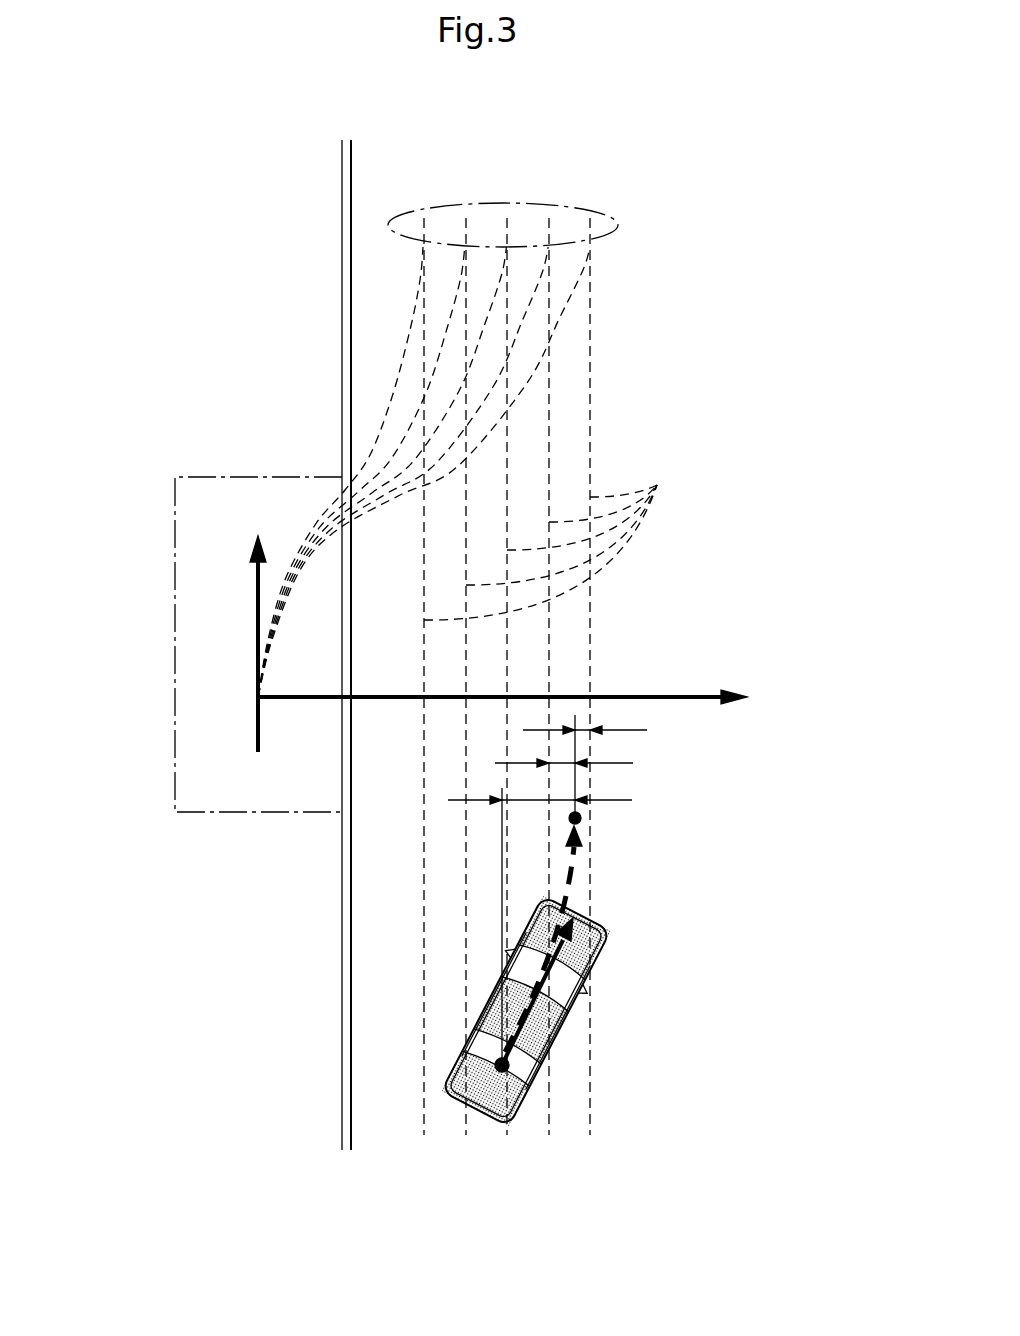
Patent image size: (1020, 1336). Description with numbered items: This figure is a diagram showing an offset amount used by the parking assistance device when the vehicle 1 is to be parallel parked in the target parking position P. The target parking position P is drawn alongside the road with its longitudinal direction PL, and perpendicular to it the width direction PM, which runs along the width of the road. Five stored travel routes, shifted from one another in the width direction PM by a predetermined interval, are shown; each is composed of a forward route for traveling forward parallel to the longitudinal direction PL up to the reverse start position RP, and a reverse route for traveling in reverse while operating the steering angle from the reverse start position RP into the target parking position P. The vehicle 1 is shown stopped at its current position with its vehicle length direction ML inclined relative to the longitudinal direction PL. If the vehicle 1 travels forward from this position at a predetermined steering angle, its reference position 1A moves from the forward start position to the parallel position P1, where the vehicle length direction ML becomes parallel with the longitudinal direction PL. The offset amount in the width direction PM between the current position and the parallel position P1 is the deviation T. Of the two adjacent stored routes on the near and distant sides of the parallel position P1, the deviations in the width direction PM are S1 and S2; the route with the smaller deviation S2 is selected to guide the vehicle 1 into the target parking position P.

The vehicle 1 is at (500, 1063).
The reference position 1A is at (492, 1073).
The reverse start position RP is at (618, 225).
The target parking position P is at (175, 660).
The longitudinal direction PL is at (257, 612).
The width direction PM is at (665, 697).
The parallel position P1 is at (583, 820).
The vehicle length direction ML is at (548, 978).
The deviation S1 is at (585, 763).
The deviation S2 is at (606, 730).
The deviation T is at (551, 800).